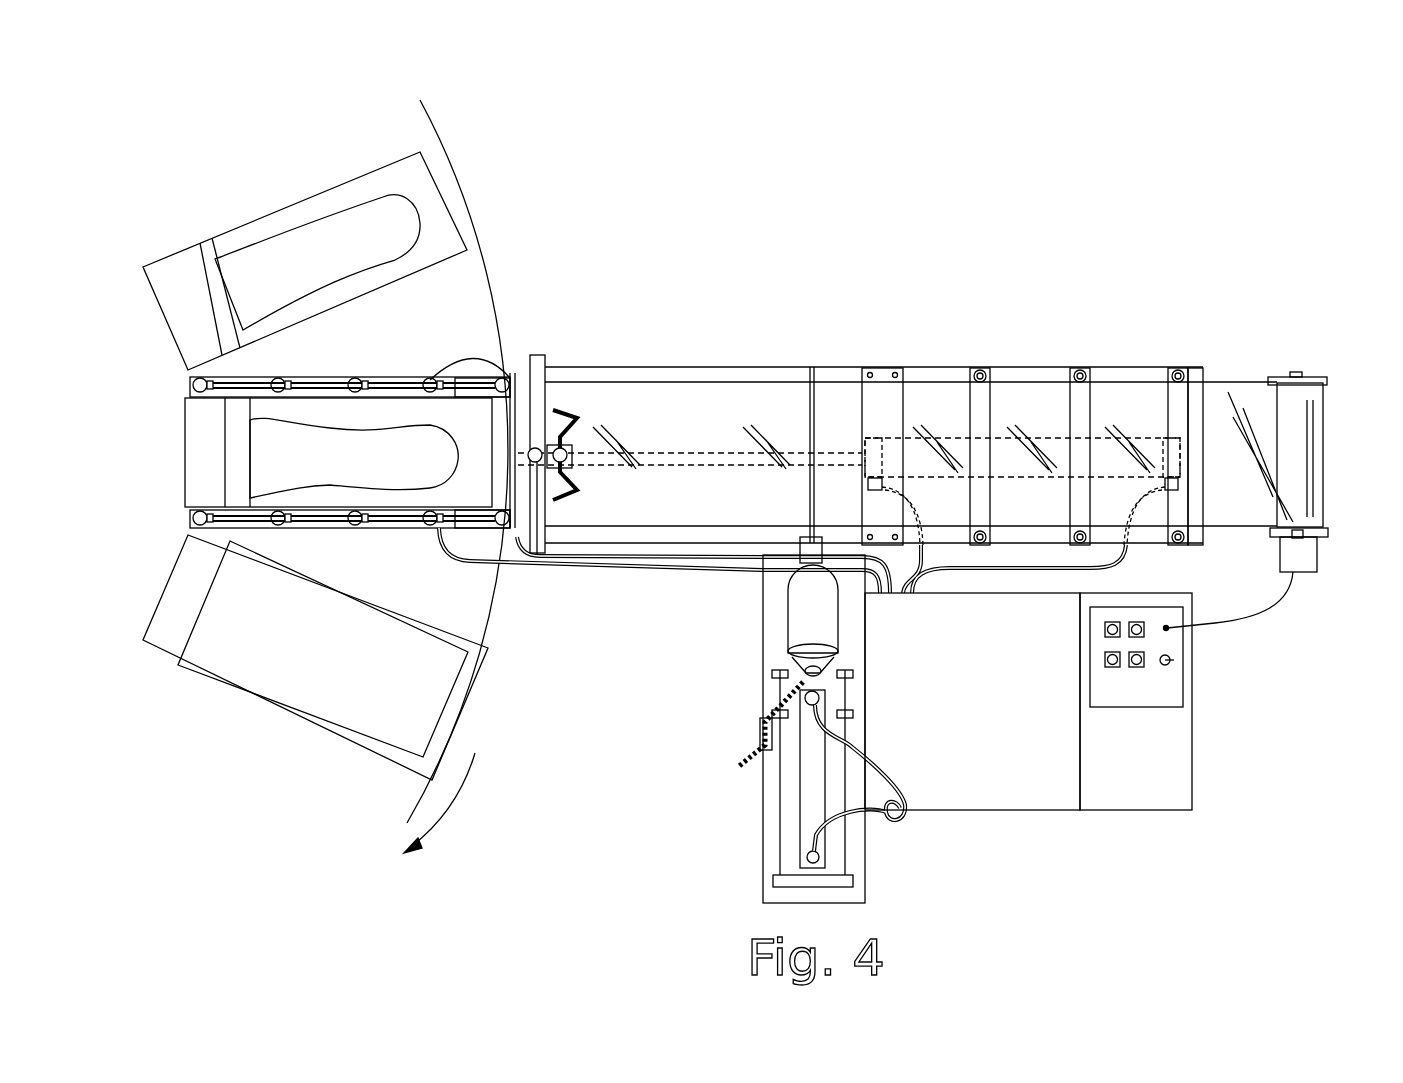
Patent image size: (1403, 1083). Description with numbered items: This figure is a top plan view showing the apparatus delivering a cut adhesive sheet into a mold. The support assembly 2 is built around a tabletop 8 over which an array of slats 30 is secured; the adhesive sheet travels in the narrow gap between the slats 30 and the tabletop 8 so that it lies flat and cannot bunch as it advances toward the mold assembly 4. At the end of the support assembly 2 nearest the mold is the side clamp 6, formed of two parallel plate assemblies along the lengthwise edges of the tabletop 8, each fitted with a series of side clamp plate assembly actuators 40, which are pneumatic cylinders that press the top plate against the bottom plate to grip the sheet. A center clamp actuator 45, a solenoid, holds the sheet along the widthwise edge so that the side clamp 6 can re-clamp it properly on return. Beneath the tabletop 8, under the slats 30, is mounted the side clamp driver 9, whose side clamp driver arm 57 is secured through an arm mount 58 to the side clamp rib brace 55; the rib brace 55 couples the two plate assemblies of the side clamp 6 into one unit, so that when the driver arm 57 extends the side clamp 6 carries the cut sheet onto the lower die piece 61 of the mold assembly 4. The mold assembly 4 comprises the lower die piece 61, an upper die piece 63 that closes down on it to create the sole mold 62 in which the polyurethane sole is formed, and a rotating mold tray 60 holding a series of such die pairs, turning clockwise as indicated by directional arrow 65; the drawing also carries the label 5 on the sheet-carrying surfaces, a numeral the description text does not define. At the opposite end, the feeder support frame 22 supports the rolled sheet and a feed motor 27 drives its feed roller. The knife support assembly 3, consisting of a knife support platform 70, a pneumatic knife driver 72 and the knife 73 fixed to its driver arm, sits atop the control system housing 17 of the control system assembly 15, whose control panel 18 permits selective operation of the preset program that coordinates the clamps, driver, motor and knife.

The support assembly 2 is at (988, 332).
The knife support assembly 3 is at (740, 696).
The mold assembly 4 is at (520, 290).
The tray 5 is at (302, 718).
The side clamp 6 is at (407, 378).
The tabletop 8 is at (937, 371).
The side clamp driver 9 is at (1012, 477).
The control system assembly 15 is at (999, 832).
The control system housing 17 is at (987, 718).
The control panel 18 is at (1150, 700).
The feeder support frame 22 is at (1313, 377).
The feed motor 27 is at (1308, 557).
The slats 30 is at (893, 418).
The side clamp plate assembly actuators 40 is at (504, 382).
The center clamp actuator 45 is at (530, 440).
The side clamp rib brace 55 is at (500, 432).
The side clamp driver arm 57 is at (670, 463).
The arm mount 58 is at (511, 484).
The rotating mold tray 60 is at (433, 330).
The lower die piece 61 is at (450, 256).
The sole mold 62 is at (322, 273).
The upper die piece 63 is at (317, 660).
The directional arrow 65 is at (452, 804).
The knife support platform 70 is at (775, 602).
The knife driver 72 is at (810, 810).
The knife 73 is at (822, 623).